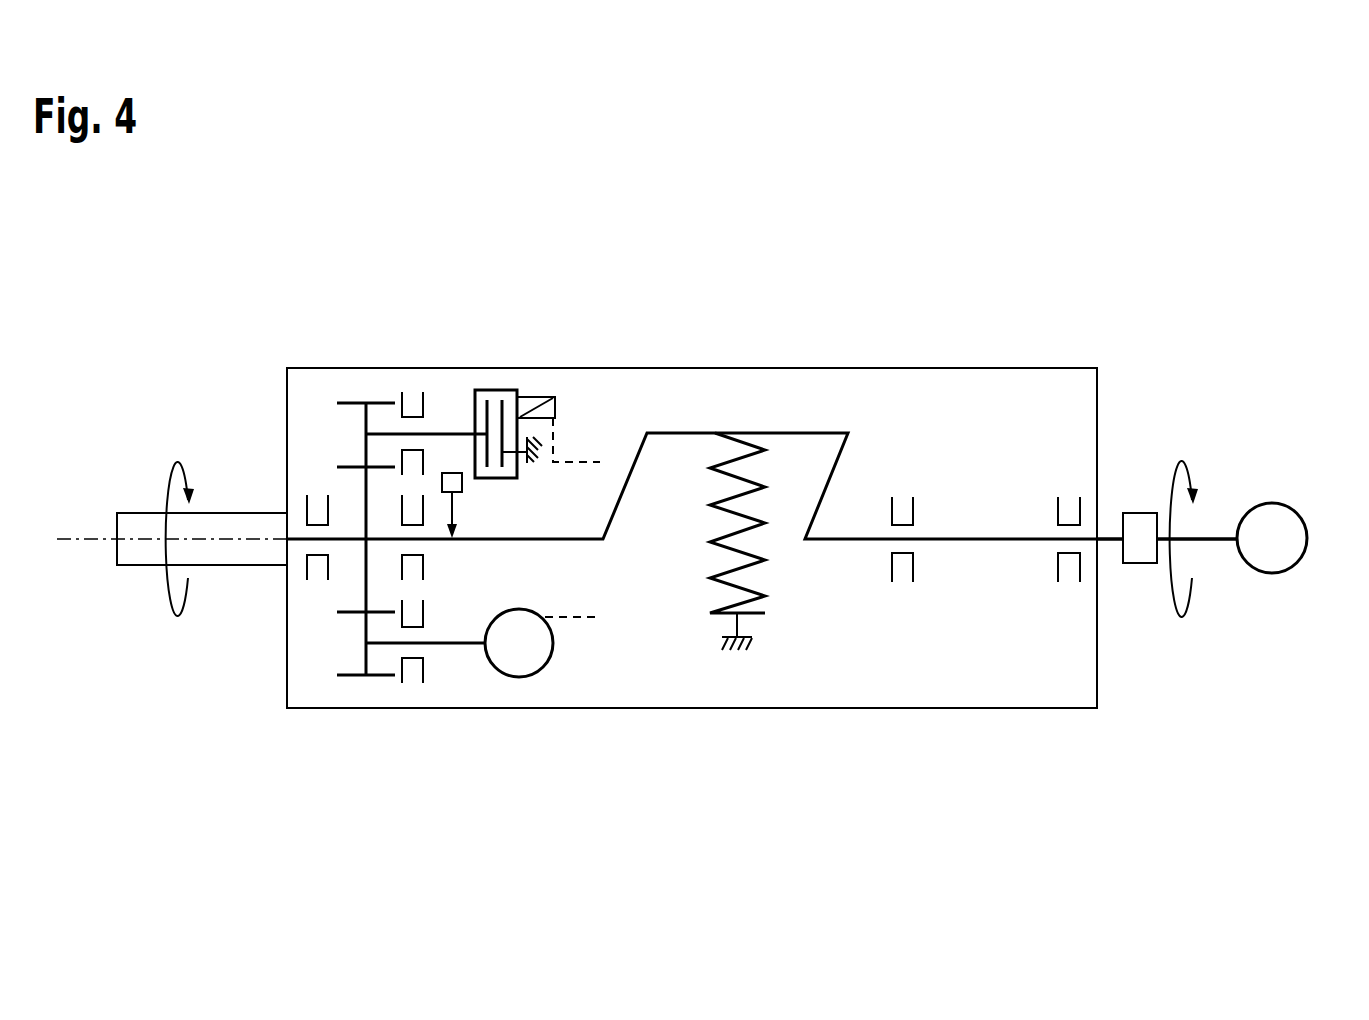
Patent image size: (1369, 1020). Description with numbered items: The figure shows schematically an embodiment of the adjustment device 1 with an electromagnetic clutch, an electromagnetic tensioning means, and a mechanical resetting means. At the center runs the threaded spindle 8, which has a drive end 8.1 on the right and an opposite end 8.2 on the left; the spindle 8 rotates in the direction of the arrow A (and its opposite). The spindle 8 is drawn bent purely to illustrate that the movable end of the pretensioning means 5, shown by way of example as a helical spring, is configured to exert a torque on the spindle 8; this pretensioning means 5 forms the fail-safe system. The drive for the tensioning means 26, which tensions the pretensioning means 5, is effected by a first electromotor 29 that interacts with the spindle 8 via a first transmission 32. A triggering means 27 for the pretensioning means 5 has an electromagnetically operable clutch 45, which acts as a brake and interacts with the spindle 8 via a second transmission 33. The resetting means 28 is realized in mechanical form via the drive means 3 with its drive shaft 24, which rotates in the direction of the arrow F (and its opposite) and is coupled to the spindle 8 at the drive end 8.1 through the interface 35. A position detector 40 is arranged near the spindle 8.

The adjustment device 1 is at (1160, 312).
The drive means 3 is at (1283, 574).
The pretensioning means 5 is at (781, 595).
The spindle 8 is at (985, 538).
The drive end 8.1 is at (1108, 538).
The second shaft end 8.2 is at (133, 522).
The drive shaft 24 is at (1237, 536).
The tensioning means 26 is at (515, 696).
The triggering means 27 is at (511, 389).
The resetting means 28 is at (1301, 537).
The first electromotor 29 is at (513, 678).
The first transmission 32 is at (366, 590).
The second transmission 33 is at (366, 486).
The interface 35 is at (1138, 564).
The position detector 40 is at (462, 483).
The electromagnetically operable clutch 45 is at (495, 390).
The arrow A is at (180, 614).
The arrow F is at (1182, 616).